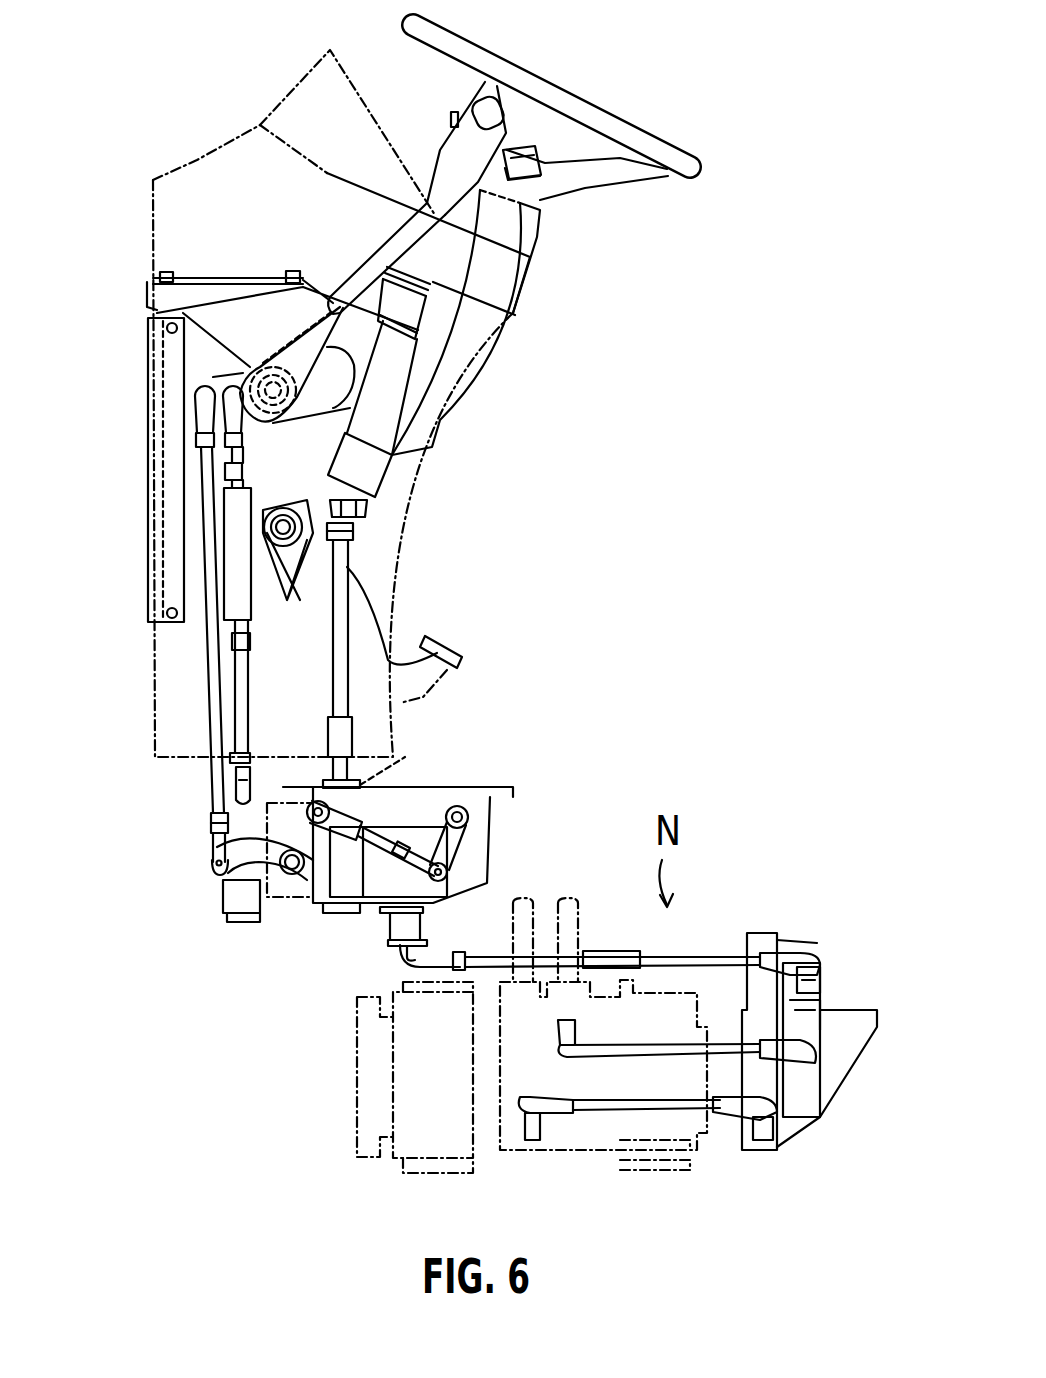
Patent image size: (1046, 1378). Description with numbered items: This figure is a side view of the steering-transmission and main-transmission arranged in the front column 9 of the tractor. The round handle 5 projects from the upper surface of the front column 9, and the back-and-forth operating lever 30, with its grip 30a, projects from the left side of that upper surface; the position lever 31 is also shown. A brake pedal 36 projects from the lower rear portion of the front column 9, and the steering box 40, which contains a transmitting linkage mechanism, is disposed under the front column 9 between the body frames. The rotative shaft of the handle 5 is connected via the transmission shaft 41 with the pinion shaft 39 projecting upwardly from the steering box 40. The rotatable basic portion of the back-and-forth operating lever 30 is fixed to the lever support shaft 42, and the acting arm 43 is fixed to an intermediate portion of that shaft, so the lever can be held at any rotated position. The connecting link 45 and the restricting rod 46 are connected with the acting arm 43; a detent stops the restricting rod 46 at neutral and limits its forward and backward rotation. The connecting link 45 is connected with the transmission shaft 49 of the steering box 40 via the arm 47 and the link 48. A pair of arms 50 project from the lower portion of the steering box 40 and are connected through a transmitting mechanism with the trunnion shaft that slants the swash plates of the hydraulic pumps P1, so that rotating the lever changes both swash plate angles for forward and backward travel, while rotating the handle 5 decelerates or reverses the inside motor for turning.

The front column 9 is at (190, 157).
The round handle 5 is at (627, 123).
The grip 30a is at (537, 105).
The position lever 31 is at (457, 108).
The back-and-forth operating lever 30 is at (387, 247).
The lever support shaft 42 is at (243, 370).
The acting arm 43 is at (433, 415).
The transmission shaft 41 is at (347, 563).
The brake pedal 36 is at (467, 650).
The restricting rod 46 is at (220, 493).
The connecting link 45 is at (210, 700).
The arm 47 is at (243, 867).
The steering box 40 is at (490, 853).
The link 48 is at (397, 823).
The transmission shaft 49 is at (467, 810).
The pinion shaft 39 is at (408, 756).
The arms 50 is at (400, 943).
The hydraulic pumps P1 is at (420, 1177).